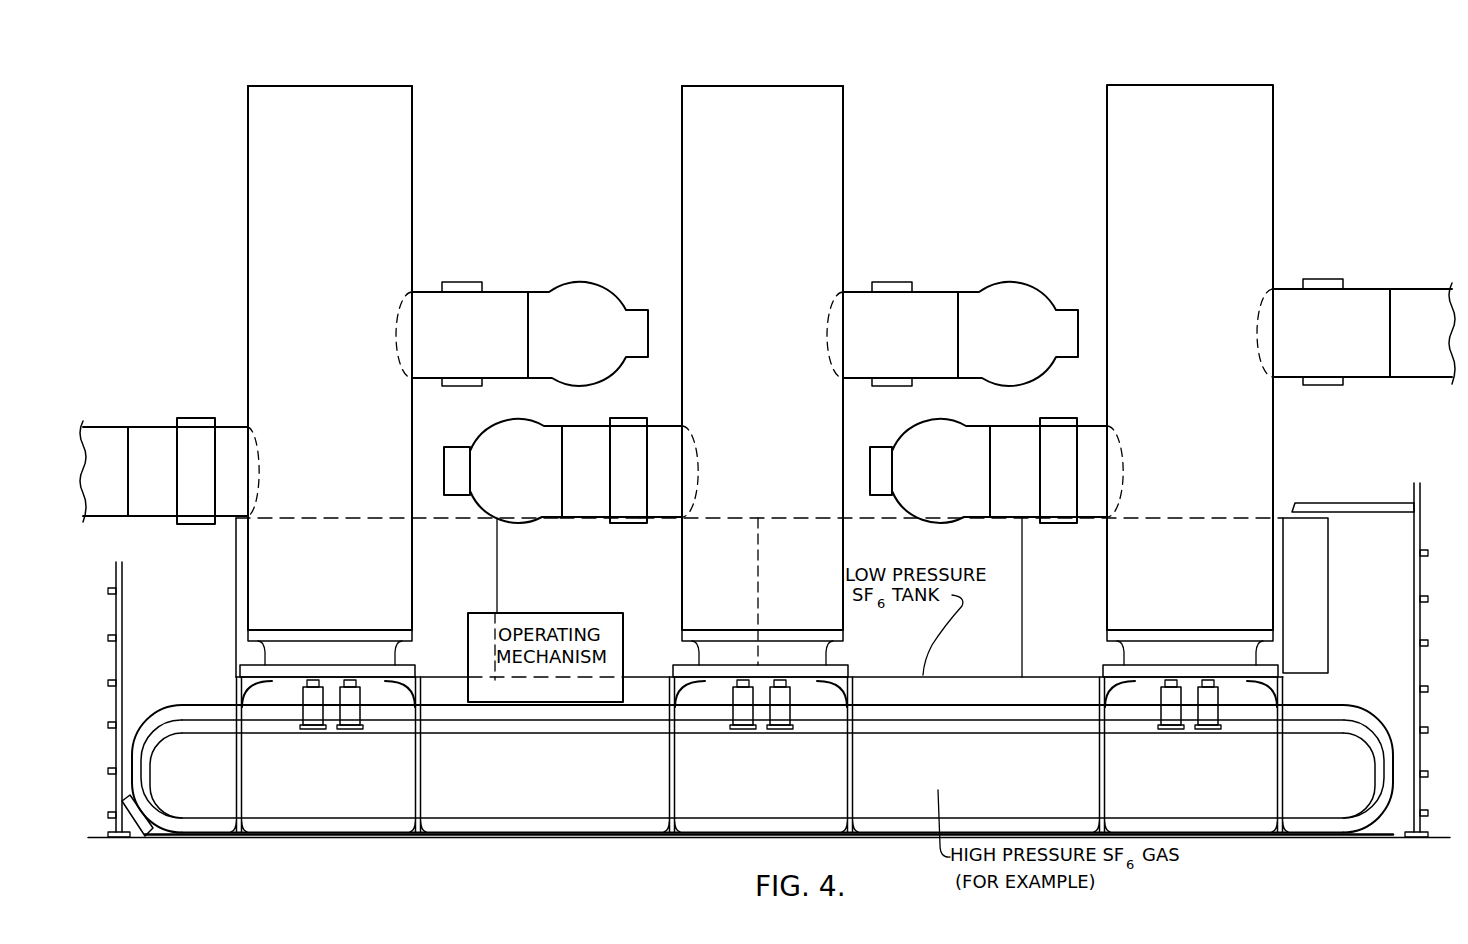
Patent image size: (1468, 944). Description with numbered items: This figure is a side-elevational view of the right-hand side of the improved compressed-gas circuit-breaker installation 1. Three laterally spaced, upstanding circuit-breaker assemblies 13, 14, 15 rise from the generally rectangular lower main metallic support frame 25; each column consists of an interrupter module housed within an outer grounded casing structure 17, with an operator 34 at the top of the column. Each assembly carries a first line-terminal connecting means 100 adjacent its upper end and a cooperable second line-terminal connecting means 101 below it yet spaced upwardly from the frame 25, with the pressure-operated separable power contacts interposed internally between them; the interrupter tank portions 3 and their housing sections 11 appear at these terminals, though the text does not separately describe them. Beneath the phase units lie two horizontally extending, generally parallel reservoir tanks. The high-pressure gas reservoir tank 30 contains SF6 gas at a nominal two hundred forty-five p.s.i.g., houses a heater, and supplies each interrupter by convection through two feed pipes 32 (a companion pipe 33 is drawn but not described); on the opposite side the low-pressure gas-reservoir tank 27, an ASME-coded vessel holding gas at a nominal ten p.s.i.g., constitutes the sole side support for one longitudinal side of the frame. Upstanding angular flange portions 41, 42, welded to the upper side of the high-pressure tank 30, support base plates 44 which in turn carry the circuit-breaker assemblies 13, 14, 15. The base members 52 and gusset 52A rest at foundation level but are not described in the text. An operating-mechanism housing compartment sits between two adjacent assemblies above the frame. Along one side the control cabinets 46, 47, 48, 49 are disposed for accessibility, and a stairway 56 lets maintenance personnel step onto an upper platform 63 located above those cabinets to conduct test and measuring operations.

The circuit-breaker installation 1 is at (941, 163).
The interrupter tank 3 is at (148, 427).
The interrupter housing section 11 is at (505, 378).
The circuit-breaker assembly 13 is at (1188, 247).
The circuit-breaker assembly 14 is at (781, 250).
The circuit-breaker assembly 15 is at (343, 248).
The casing structure 17 is at (245, 366).
The support frame 25 is at (455, 870).
The low-pressure gas-reservoir tank 27 is at (940, 705).
The high-pressure gas reservoir tank 30 is at (345, 803).
The feed pipe 32 is at (307, 712).
The valve cylinder 33 is at (362, 710).
The operator 34 is at (386, 143).
The upstanding angular flange portion 41 is at (240, 689).
The upstanding angular flange portion 42 is at (422, 690).
The base plate 44 is at (338, 665).
The control cabinet 46 is at (1192, 516).
The control cabinet 47 is at (884, 521).
The control cabinet 48 is at (590, 522).
The control cabinet 49 is at (235, 573).
The base plate 52 is at (601, 838).
The gusset 52A is at (140, 838).
The stairway 56 is at (117, 649).
The upper platform 63 is at (437, 519).
The first line-terminal connecting means 100 is at (430, 298).
The second line-terminal connecting means 101 is at (148, 505).